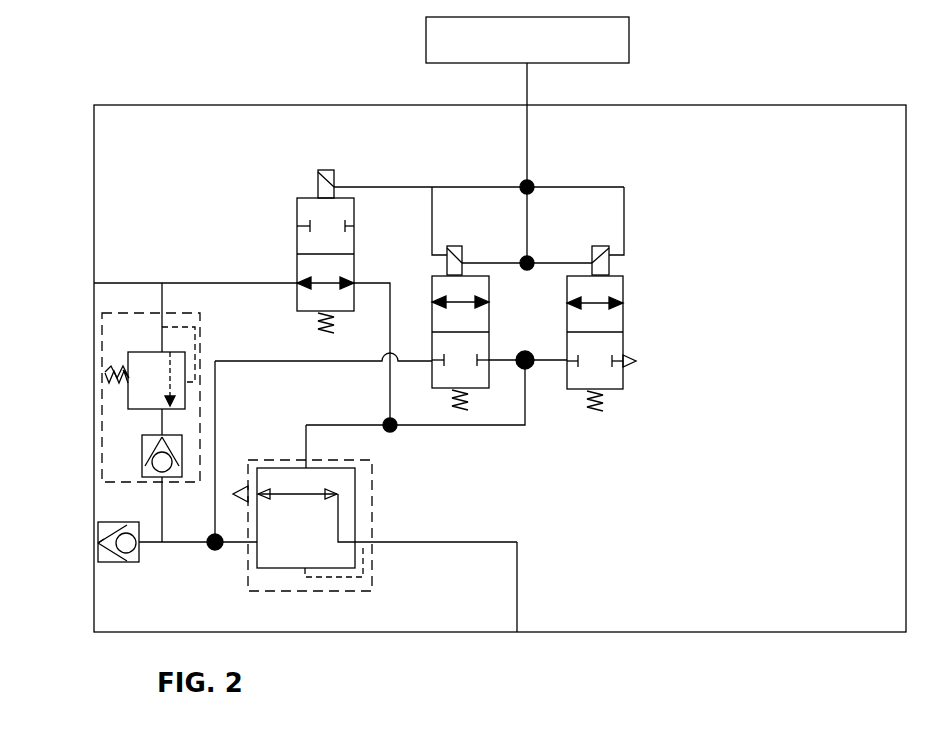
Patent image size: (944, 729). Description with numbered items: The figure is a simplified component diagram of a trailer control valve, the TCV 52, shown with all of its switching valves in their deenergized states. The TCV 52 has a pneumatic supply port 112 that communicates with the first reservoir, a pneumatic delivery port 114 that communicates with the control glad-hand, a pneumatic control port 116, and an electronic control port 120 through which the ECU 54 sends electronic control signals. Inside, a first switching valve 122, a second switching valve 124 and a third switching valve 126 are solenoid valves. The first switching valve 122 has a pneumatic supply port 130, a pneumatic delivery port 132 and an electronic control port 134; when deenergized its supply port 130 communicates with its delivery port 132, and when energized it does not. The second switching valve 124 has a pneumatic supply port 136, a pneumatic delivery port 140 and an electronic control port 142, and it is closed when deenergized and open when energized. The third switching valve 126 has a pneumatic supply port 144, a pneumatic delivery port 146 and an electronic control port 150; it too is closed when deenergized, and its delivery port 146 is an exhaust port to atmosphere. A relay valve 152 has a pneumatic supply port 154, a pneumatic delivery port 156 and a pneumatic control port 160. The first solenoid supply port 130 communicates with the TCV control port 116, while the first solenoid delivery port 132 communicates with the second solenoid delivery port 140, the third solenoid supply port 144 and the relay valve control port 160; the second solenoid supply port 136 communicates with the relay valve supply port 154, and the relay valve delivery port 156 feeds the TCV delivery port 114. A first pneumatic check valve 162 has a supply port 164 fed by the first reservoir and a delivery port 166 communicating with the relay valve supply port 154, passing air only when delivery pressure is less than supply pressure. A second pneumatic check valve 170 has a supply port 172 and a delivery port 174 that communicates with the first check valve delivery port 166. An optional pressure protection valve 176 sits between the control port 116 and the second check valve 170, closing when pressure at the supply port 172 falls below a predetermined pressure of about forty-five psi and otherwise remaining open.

The trailer control valve (TCV) 52 is at (124, 139).
The ECU 54 is at (629, 40).
The pneumatic supply port 112 is at (98, 543).
The pneumatic delivery port 114 is at (519, 636).
The pneumatic control port 116 is at (94, 283).
The electronic control port 120 is at (527, 104).
The first switching valve 122 is at (297, 205).
The second switching valve 124 is at (432, 277).
The third switching valve 126 is at (623, 285).
The pneumatic supply port 130 is at (297, 281).
The pneumatic delivery port 132 is at (354, 283).
The electronic control port 134 is at (334, 185).
The pneumatic supply port 136 is at (432, 358).
The pneumatic delivery port 140 is at (489, 360).
The electronic control port 142 is at (462, 258).
The pneumatic supply port 144 is at (567, 358).
The pneumatic delivery port 146 is at (615, 352).
The electronic control port 150 is at (609, 248).
The relay valve 152 is at (372, 478).
The pneumatic supply port 154 is at (236, 548).
The pneumatic delivery port 156 is at (372, 542).
The pneumatic control port 160 is at (306, 464).
The first pneumatic check valve 162 is at (120, 562).
The supply port 164 is at (98, 543).
The delivery port 166 is at (140, 536).
The second pneumatic check valve 170 is at (142, 446).
The supply port 172 is at (160, 436).
The delivery port 174 is at (158, 478).
The pressure protection valve (PPV) 176 is at (102, 333).